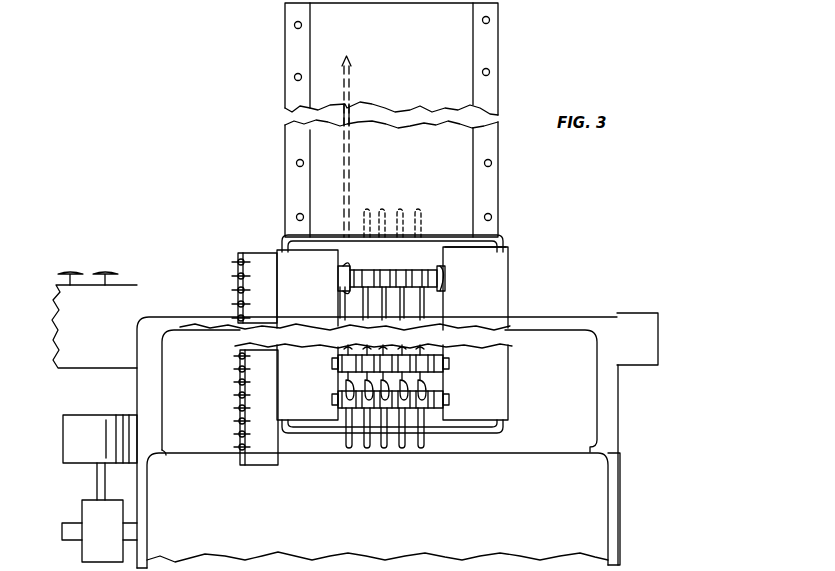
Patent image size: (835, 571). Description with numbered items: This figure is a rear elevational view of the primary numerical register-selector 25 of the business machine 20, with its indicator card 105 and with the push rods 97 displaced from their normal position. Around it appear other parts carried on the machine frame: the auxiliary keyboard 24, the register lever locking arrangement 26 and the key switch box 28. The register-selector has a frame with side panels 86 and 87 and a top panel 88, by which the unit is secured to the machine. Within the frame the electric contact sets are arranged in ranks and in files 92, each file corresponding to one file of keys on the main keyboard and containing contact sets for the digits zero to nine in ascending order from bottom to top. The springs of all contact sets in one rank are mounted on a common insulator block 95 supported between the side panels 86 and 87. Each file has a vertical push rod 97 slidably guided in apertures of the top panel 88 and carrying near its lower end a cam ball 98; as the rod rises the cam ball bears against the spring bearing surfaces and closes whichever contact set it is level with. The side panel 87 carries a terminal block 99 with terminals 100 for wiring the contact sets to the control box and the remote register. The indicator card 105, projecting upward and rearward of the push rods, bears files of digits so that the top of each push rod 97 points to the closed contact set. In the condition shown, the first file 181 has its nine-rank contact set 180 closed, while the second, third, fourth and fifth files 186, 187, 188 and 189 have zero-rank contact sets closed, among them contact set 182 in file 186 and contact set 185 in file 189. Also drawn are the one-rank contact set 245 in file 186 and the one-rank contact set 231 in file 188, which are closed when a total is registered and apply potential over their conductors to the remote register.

The indicator card 105 is at (498, 60).
The files of contact sets 92 is at (358, 222).
The push rod 97 is at (376, 215).
The contact set in the "9" rank of the first file 180 is at (350, 265).
The top panel 88 is at (505, 235).
The side panel 87 is at (282, 251).
The terminal block 99 is at (243, 253).
The terminals 100 is at (238, 268).
The cam ball 98 is at (341, 272).
The insulator block 95 is at (445, 274).
The primary numerical register-selector 25 is at (509, 265).
The side panel 86 is at (509, 289).
The auxiliary keyboard 24 is at (125, 284).
The key switch box 28 is at (648, 333).
The business machine 20 is at (620, 402).
The register lever locking arrangement 26 is at (97, 478).
The contact set in the "0" rank of the second file 182 is at (372, 392).
The "1" contact set of the second file 245 is at (378, 340).
The "1" contact set of the fourth file 231 is at (415, 366).
The contact set in the "0" rank of the fifth file 185 is at (433, 392).
The first file of contact sets 181 is at (358, 418).
The second file of contact sets 186 is at (376, 418).
The third file of contact sets 187 is at (393, 418).
The fourth file of contact sets 188 is at (412, 418).
The fifth file of contact sets 189 is at (430, 418).